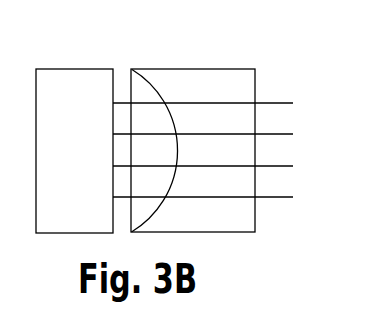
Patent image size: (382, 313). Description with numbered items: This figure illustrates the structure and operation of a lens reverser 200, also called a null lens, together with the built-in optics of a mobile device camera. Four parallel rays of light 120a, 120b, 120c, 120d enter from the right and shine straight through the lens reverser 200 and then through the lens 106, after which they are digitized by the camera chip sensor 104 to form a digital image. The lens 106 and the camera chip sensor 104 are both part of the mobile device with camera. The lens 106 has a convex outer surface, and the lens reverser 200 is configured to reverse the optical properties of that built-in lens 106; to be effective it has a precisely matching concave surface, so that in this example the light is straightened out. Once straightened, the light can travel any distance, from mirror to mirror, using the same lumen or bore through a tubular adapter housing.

The camera chip sensor 104 is at (53, 67).
The lens 106 is at (133, 70).
The lens reverser 200 is at (228, 69).
The ray of light 120a is at (277, 103).
The ray of light 120b is at (277, 134).
The ray of light 120c is at (277, 166).
The ray of light 120d is at (277, 197).